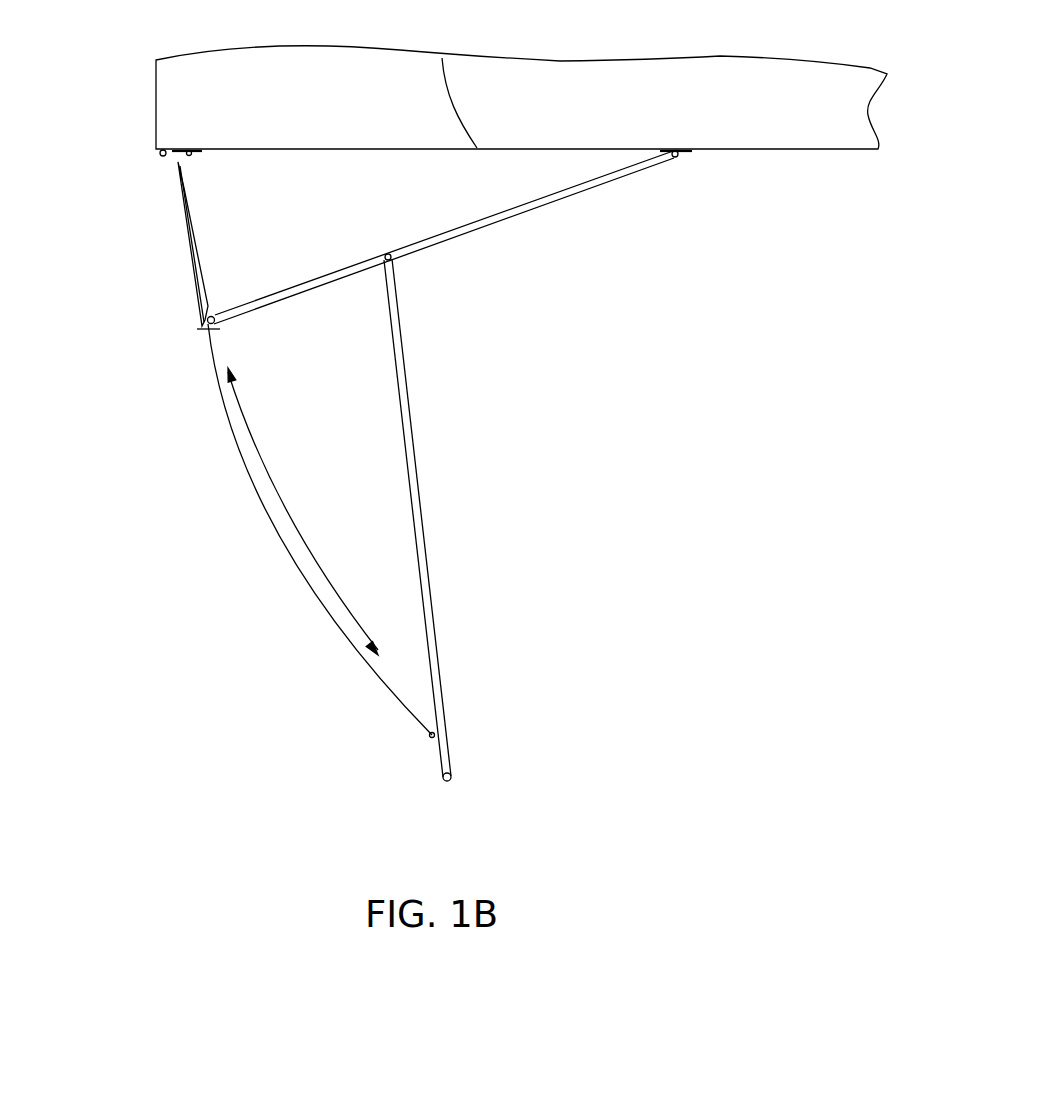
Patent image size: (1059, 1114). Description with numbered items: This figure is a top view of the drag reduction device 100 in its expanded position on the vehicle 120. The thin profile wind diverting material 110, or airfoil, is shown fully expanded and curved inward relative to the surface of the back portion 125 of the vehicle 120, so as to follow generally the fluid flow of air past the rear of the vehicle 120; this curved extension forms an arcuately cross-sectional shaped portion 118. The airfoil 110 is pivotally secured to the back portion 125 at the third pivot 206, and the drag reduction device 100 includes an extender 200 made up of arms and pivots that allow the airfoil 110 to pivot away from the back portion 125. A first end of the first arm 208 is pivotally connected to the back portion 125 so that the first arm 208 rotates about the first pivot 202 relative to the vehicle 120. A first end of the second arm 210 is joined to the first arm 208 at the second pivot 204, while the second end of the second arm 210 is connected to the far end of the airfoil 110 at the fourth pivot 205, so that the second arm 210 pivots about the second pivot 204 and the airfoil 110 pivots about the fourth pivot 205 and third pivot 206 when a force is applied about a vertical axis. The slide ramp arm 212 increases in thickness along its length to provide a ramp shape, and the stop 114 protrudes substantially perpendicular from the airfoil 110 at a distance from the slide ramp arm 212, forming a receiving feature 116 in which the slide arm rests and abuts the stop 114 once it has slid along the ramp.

The drag reduction device 100 is at (108, 206).
The wind diverting material 110 is at (278, 530).
The stop 114 is at (215, 330).
The receiving feature 116 is at (200, 330).
The arcuately cross-sectional shaped portion 118 is at (272, 482).
The vehicle 120 is at (558, 112).
The back portion 125 is at (442, 58).
The extender 200 is at (603, 310).
The first pivot 202 is at (680, 157).
The second pivot 204 is at (395, 261).
The fourth pivot 205 is at (432, 737).
The third pivot 206 is at (186, 150).
The first arm 208 is at (596, 183).
The second arm 210 is at (420, 473).
The slide ramp arm 212 is at (192, 281).